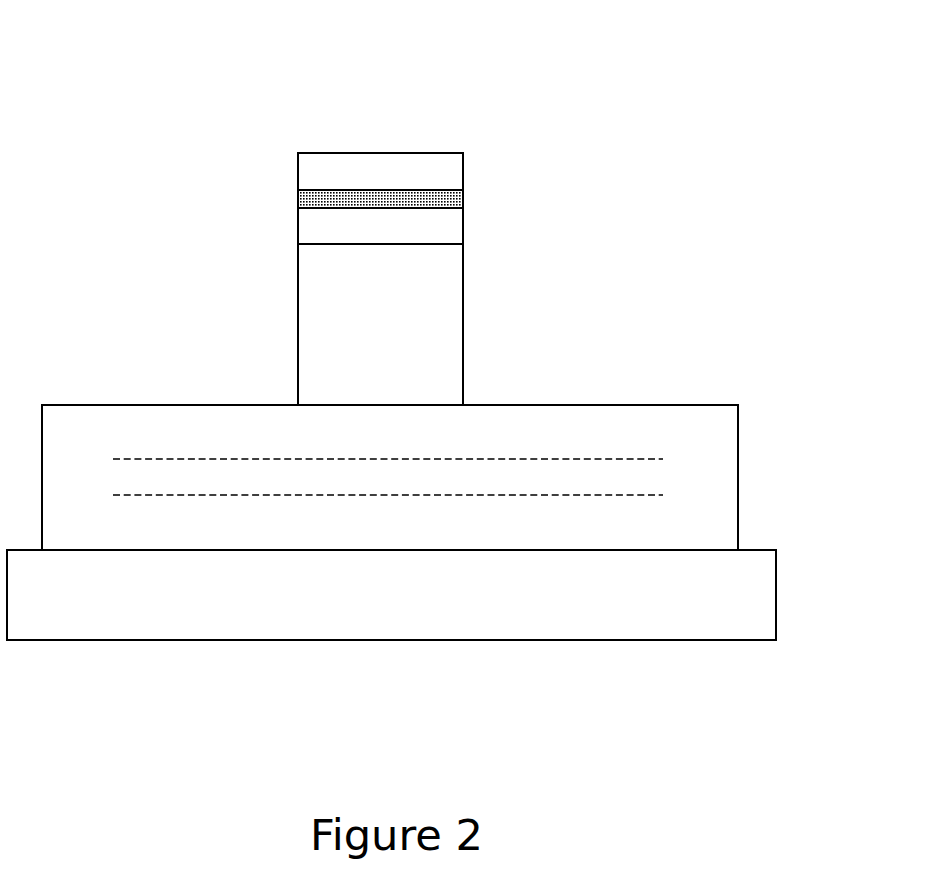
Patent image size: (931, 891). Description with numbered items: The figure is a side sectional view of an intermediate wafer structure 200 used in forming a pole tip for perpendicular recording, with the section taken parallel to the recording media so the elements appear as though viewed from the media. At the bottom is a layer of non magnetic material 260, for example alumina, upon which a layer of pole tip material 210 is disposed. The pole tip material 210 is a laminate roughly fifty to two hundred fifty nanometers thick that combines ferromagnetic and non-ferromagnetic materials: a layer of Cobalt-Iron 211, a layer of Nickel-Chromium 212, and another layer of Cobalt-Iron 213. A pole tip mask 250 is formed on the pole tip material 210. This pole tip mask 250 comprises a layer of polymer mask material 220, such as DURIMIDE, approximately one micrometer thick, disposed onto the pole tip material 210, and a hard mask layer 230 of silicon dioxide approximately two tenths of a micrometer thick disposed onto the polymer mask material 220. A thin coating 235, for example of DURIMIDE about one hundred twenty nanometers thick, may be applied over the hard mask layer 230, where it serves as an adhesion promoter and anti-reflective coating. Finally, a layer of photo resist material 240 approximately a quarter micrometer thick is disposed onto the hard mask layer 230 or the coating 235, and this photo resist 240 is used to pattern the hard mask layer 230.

The intermediate wafer structure 200 is at (435, 39).
The layer of pole tip material 210 is at (752, 470).
The layer of Cobalt-Iron 211 is at (572, 441).
The layer of Nickel-Chromium 212 is at (660, 489).
The layer of Cobalt-Iron 213 is at (445, 536).
The layer of polymer mask material 220 is at (420, 326).
The hard mask layer 230 is at (415, 238).
The thin coating 235 is at (473, 197).
The layer of photo resist material 240 is at (405, 179).
The pole tip mask 250 is at (288, 155).
The layer of non magnetic material 260 is at (391, 595).